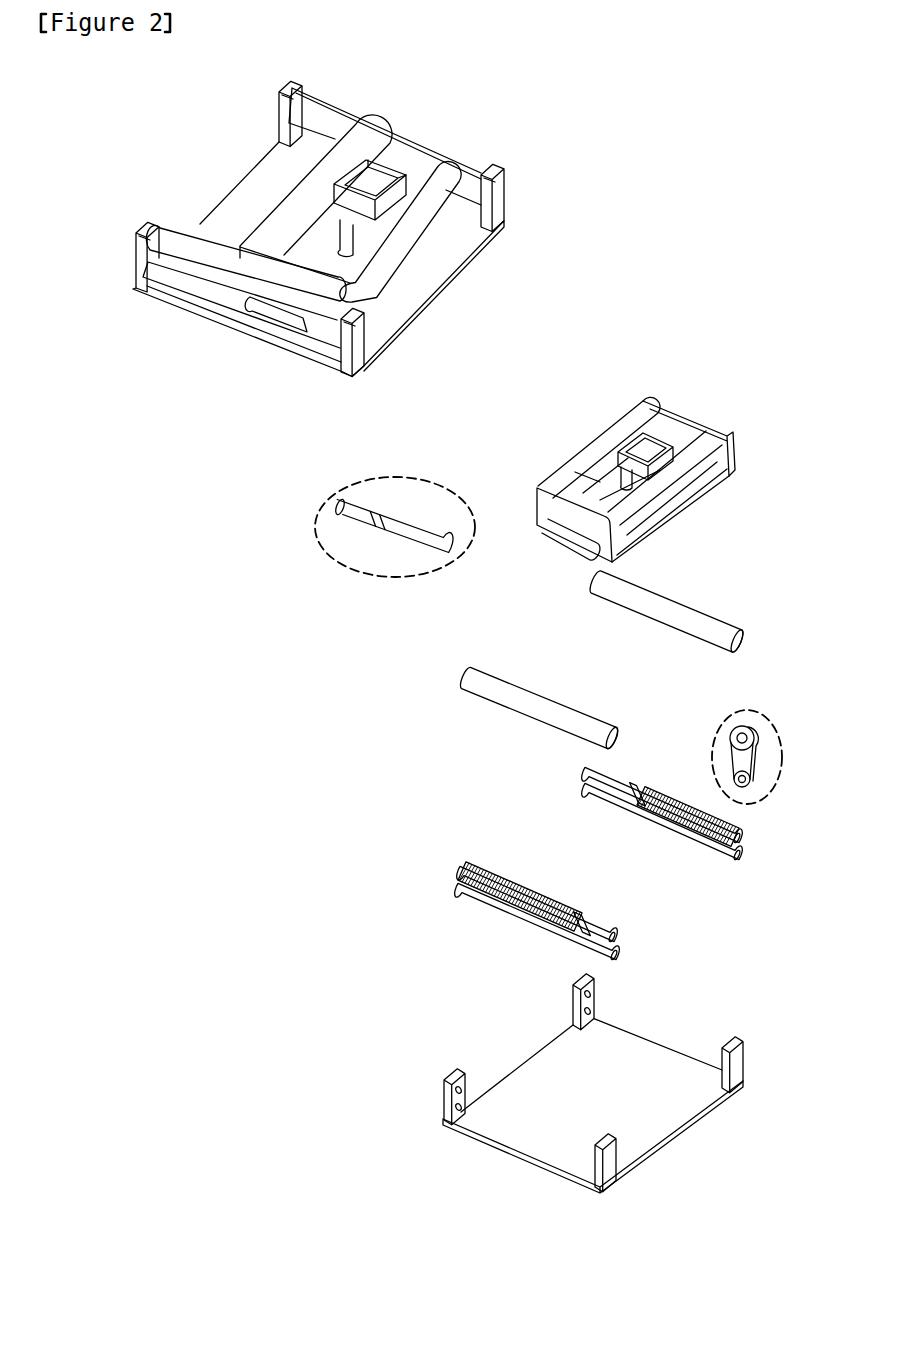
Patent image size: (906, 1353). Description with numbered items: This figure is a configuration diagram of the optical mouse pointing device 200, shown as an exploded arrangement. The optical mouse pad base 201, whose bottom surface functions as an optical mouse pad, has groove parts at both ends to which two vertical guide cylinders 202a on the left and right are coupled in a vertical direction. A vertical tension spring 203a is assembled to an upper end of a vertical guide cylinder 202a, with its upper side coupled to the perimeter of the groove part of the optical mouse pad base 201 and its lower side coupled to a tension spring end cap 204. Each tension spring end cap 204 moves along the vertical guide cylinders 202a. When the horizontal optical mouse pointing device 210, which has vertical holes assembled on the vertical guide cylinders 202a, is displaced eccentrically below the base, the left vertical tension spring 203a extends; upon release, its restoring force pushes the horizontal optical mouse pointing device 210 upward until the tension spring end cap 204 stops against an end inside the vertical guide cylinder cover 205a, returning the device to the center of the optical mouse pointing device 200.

The optical mouse pointing device 200 is at (113, 188).
The optical mouse pad base 201 is at (627, 1057).
The vertical guide cylinder 202a is at (617, 780).
The vertical tension spring 203a is at (483, 863).
The tension spring end cap 204 is at (637, 783).
The vertical guide cylinder cover 205a is at (623, 592).
The horizontal optical mouse pointing device 210 is at (548, 474).